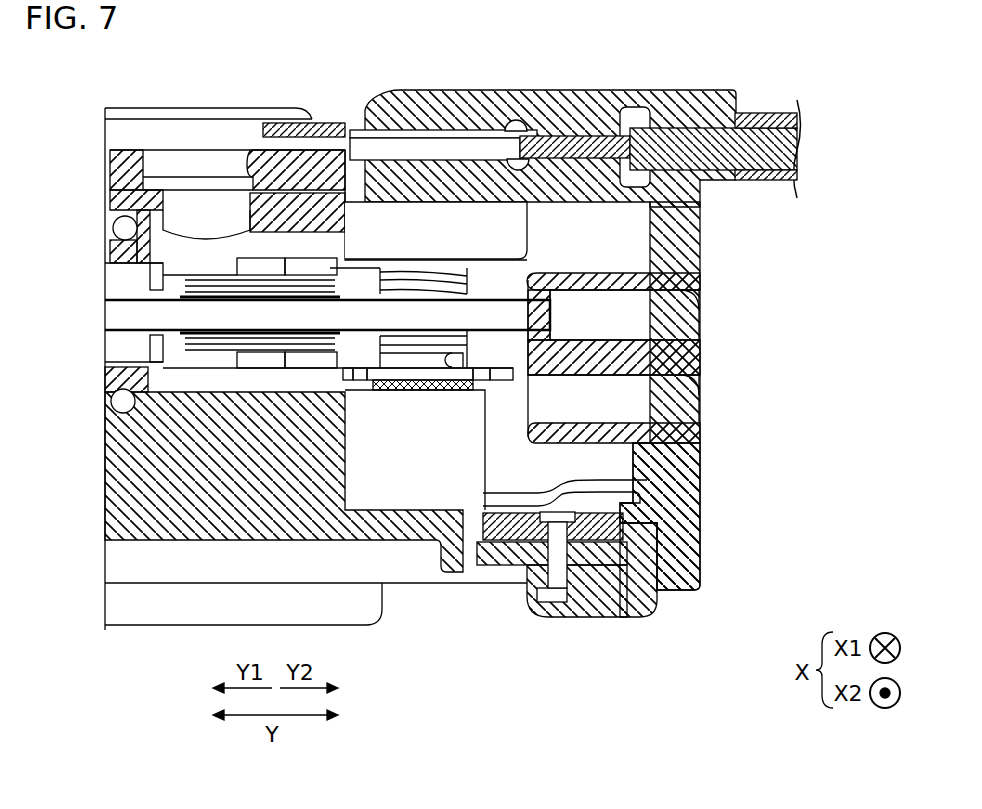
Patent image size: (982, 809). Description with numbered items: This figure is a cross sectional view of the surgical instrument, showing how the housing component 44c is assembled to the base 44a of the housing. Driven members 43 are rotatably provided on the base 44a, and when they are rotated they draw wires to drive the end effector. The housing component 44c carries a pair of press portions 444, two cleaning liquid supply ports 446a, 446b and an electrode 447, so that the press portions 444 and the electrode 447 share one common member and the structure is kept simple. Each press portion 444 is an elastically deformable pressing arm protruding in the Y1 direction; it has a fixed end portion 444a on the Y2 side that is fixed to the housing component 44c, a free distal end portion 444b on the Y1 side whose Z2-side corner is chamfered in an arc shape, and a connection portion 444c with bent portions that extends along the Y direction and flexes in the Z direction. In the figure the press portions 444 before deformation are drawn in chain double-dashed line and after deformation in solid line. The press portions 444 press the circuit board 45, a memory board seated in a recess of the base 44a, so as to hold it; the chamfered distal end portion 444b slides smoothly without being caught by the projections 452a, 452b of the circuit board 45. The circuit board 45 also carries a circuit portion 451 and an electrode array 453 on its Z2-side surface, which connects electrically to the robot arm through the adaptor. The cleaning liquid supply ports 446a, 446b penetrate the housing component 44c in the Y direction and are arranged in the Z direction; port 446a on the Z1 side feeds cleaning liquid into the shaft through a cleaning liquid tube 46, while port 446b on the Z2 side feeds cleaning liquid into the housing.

The driven member 43 is at (421, 233).
The cleaning liquid tube 46 is at (325, 313).
The electrode 447 is at (745, 113).
The housing component 44c is at (784, 90).
The cleaning liquid supply port 446a is at (700, 312).
The cleaning liquid supply port 446b is at (700, 395).
The press portion 444 is at (700, 493).
The fixed end portion 444a is at (646, 487).
The distal end portion 444b is at (526, 503).
The connection portion 444c is at (572, 484).
The base 44a is at (402, 553).
The circuit board 45 is at (494, 552).
The circuit portion 451 is at (562, 552).
The projection 452a is at (524, 555).
The projection 452b is at (652, 590).
The electrode array 453 is at (590, 593).